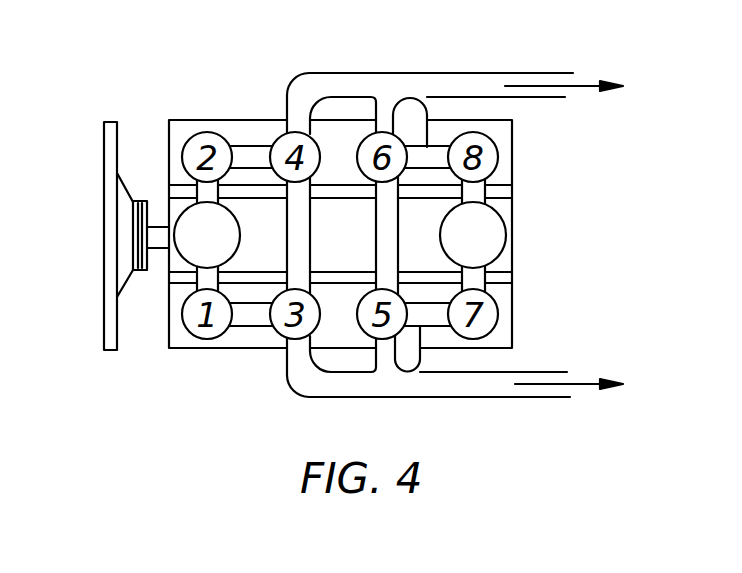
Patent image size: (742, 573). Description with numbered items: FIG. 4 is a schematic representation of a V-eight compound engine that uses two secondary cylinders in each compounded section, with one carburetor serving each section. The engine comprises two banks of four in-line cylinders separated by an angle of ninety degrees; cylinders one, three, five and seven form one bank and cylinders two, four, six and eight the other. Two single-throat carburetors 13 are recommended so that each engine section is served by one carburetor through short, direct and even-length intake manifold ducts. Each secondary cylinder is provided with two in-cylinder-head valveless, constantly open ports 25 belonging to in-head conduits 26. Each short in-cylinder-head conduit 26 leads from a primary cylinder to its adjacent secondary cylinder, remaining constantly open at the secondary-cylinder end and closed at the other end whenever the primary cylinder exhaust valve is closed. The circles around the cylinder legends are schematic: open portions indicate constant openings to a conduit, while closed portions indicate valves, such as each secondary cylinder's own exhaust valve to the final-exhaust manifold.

The single-throat carburetor 13 is at (200, 253).
The valveless port 25 is at (276, 152).
The in-head conduit 26 is at (235, 140).